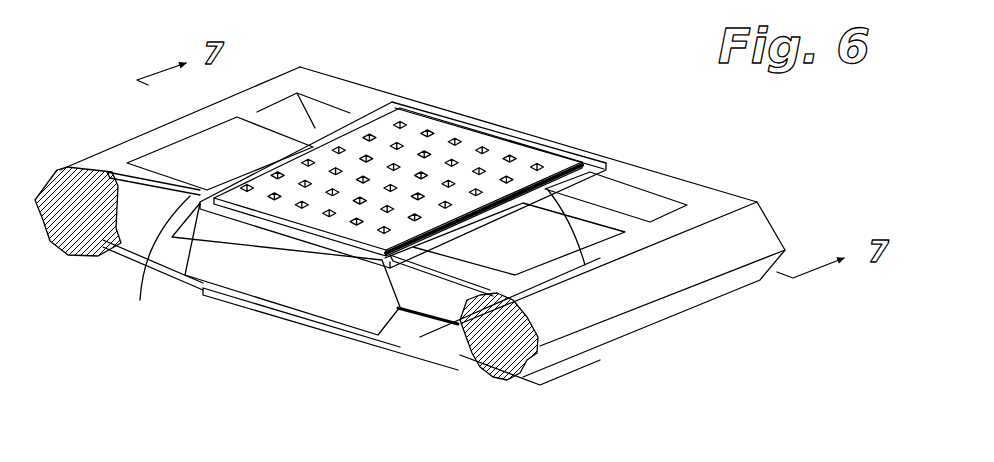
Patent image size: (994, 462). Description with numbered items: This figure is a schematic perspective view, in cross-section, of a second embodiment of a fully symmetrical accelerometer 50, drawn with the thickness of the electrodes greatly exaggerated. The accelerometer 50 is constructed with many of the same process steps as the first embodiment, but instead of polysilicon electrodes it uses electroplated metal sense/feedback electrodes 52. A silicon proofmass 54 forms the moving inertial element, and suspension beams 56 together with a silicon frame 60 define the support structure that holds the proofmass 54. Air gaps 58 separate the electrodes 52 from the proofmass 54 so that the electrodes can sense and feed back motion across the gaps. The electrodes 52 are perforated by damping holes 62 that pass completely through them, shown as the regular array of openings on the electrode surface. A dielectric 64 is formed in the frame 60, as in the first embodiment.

The accelerometer 50 is at (495, 75).
The electroplated metal sense/feedback electrodes 52 is at (430, 105).
The silicon proofmass 54 is at (270, 287).
The suspension beams 56 is at (257, 120).
The air gaps 58 is at (368, 340).
The silicon frame 60 is at (326, 86).
The damping holes 62 is at (487, 148).
The dielectric 64 is at (594, 163).